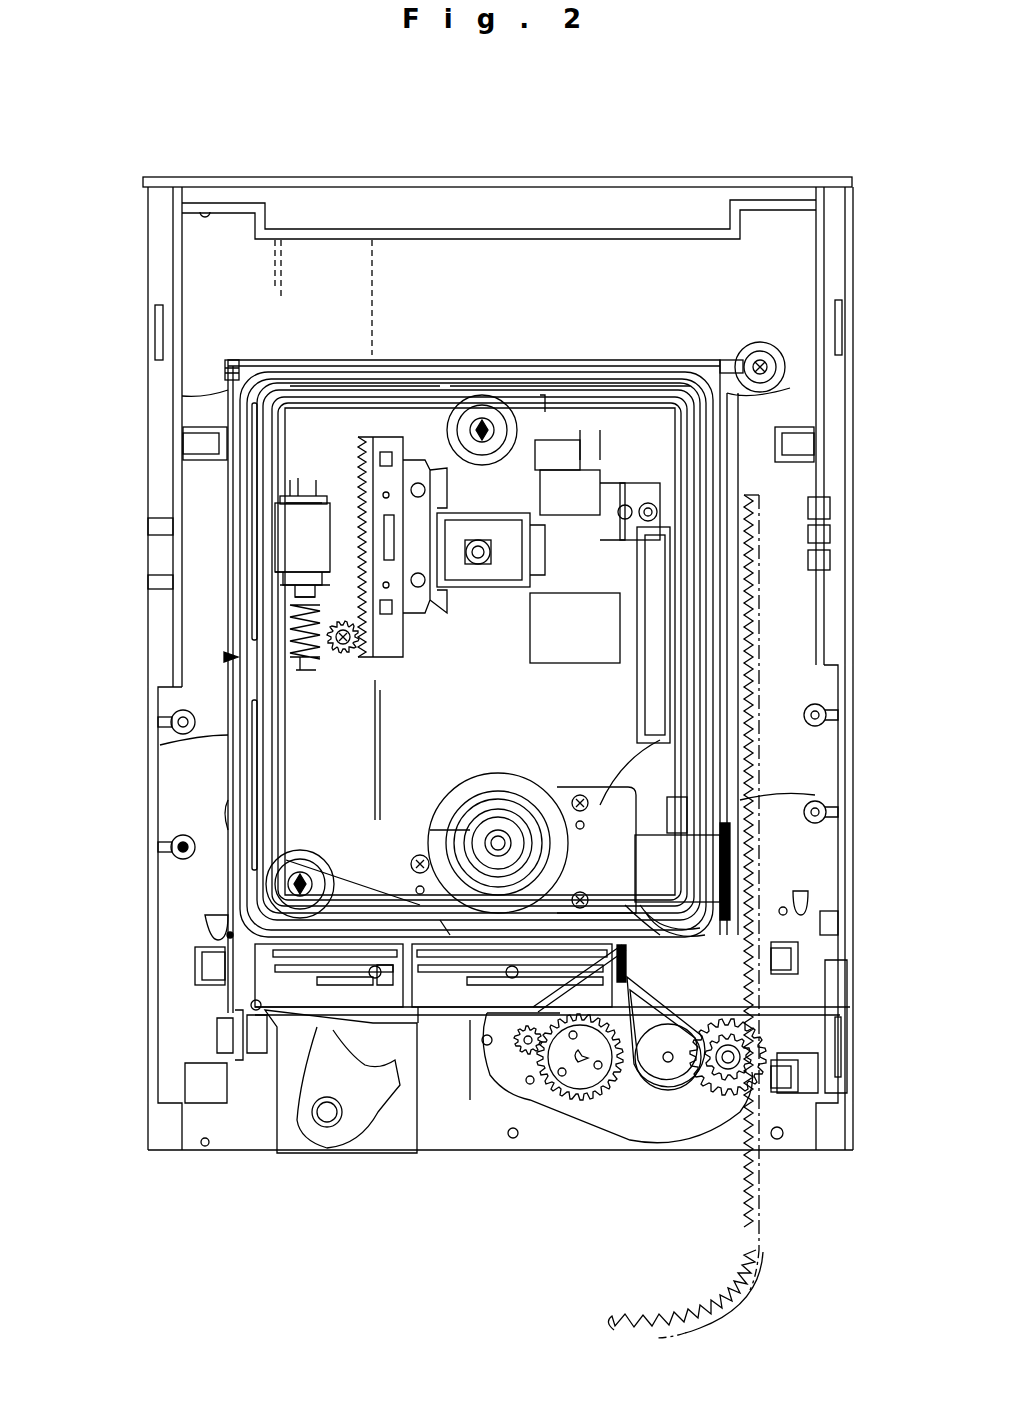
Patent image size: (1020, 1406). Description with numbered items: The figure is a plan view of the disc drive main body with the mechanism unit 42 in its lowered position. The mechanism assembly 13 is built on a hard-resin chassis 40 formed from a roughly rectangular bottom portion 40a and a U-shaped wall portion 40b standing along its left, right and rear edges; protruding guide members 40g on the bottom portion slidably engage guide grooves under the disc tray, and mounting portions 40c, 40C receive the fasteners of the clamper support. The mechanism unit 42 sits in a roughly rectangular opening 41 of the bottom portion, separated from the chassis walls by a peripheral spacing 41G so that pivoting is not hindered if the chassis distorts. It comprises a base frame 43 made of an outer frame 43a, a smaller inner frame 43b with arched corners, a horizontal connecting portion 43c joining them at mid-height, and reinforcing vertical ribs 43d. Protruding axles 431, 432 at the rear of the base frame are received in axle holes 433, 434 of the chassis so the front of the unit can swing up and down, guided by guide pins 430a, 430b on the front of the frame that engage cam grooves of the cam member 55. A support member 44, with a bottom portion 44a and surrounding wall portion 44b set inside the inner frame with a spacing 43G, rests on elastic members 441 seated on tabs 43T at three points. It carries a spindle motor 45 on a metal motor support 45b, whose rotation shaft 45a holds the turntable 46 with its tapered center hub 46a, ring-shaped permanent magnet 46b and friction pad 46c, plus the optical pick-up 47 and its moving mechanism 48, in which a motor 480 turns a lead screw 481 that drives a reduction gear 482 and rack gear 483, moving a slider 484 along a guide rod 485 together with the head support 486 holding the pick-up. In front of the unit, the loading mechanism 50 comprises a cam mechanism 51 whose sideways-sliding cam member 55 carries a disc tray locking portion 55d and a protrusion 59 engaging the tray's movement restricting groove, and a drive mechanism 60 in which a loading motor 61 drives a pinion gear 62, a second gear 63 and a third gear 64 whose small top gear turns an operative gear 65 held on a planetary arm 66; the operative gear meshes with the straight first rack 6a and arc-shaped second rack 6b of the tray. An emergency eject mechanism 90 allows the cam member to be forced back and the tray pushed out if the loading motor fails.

The mechanism assembly 13 is at (664, 162).
The chassis 40 is at (786, 165).
The bottom portion 40a is at (499, 277).
The wall portion 40b is at (207, 212).
The mounting portions 40c is at (825, 710).
The mounting portion 40C is at (158, 848).
The protruding guide members 40g is at (200, 920).
The opening 41 is at (330, 359).
The peripheral spacing 41G is at (228, 822).
The mechanism unit 42 is at (252, 610).
The base frame 43 is at (640, 368).
The outer frame 43a is at (800, 470).
The inner frame 43b is at (820, 502).
The horizontal connecting portion 43c is at (818, 535).
The reinforcing vertical ribs 43d is at (818, 560).
The spacing 43G is at (160, 745).
The tabs 43T is at (478, 400).
The support member 44 is at (280, 700).
The bottom portion 44a is at (480, 651).
The wall portion 44b is at (530, 410).
The spindle motor 45 is at (674, 709).
The rotation shaft 45a is at (505, 840).
The motor support 45b is at (820, 792).
The turntable 46 is at (560, 805).
The center hub 46a is at (510, 820).
The permanent magnet 46b is at (499, 836).
The pad 46c is at (460, 800).
The optical pick-up 47 is at (478, 565).
The optical pick-up moving mechanism 48 is at (380, 595).
The loading mechanism 50 is at (460, 1036).
The cam mechanism 51 is at (432, 1020).
The cam member 55 is at (253, 992).
The disc tray locking portion 55d is at (320, 1110).
The protrusion 59 is at (250, 1007).
The drive mechanism 60 is at (603, 1112).
The loading motor 61 is at (490, 1105).
The pinion gear 62 is at (525, 1050).
The second gear 63 is at (580, 1090).
The third gear 64 is at (650, 1120).
The operative gear 65 is at (730, 1100).
The planetary arm 66 is at (672, 1093).
The emergency eject mechanism 90 is at (370, 1130).
The first rack 6a is at (752, 635).
The second rack 6b is at (748, 1290).
The guide pin 430a is at (398, 930).
The guide pin 430b is at (580, 935).
The protruding axle 431 is at (752, 352).
The protruding axle 432 is at (232, 372).
The axle hole 433 is at (790, 392).
The axle hole 434 is at (182, 400).
The elastic members 441 is at (470, 398).
The motor 480 is at (313, 508).
The lead screw 481 is at (285, 672).
The reduction gear 482 is at (305, 660).
The rack gear 483 is at (355, 652).
The slider 484 is at (432, 615).
The guide rod 485 is at (420, 755).
The head support 486 is at (530, 650).